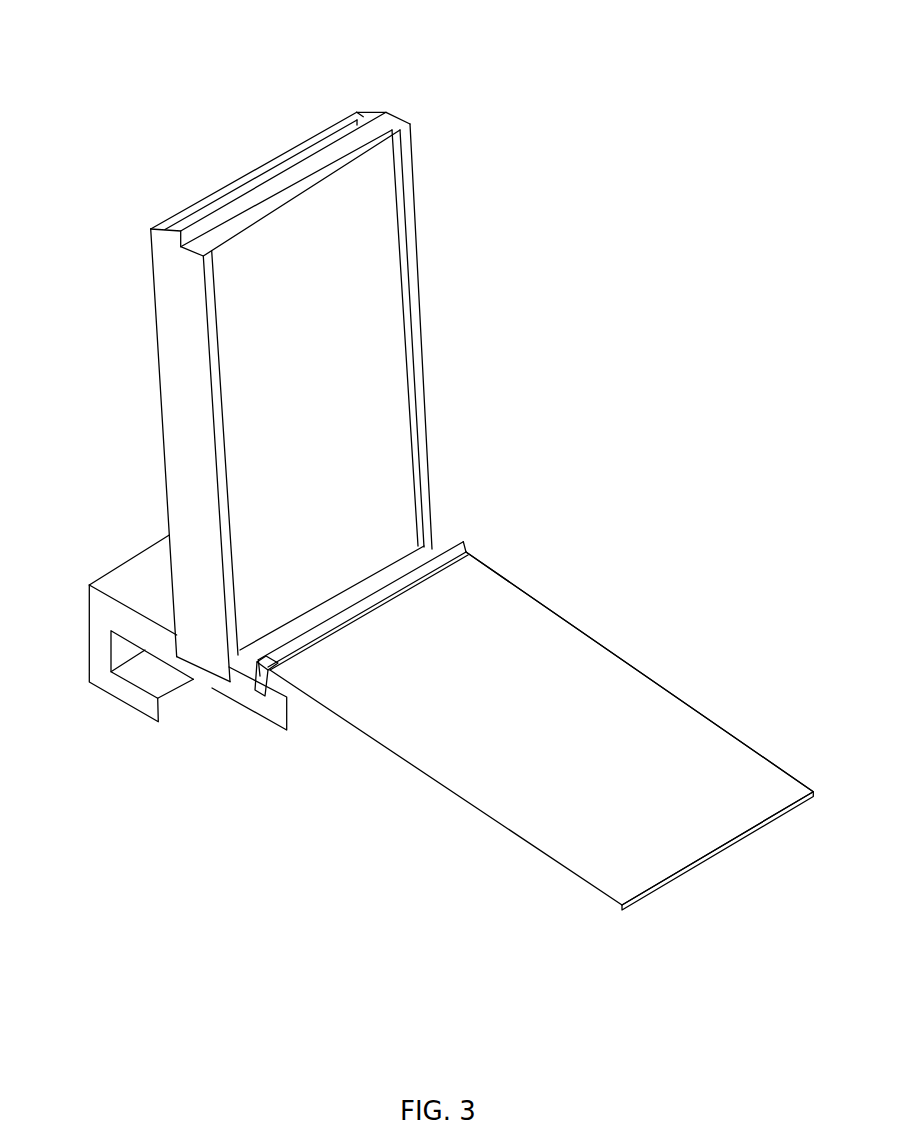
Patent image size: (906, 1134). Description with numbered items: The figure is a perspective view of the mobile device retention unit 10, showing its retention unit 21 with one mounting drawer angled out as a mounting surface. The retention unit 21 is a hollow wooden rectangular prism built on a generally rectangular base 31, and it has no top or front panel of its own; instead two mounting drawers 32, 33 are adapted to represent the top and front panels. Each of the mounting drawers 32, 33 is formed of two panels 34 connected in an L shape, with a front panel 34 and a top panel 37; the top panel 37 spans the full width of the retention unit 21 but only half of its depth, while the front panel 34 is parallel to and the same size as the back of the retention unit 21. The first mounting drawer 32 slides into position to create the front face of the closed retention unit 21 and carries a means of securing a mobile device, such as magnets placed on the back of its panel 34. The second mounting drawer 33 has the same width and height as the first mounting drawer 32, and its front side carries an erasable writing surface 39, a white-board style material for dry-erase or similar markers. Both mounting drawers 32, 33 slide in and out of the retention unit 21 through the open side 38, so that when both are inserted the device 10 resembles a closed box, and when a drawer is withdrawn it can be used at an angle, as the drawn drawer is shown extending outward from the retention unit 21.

The mobile device retention unit 10 is at (101, 55).
The retention unit 21 is at (181, 401).
The base 31 is at (208, 663).
The first mounting drawer 32 is at (378, 378).
The second mounting drawer 33 is at (460, 770).
The panel 34 is at (515, 607).
The top panel 37 is at (385, 127).
The open side 38 is at (410, 322).
The erasable writing surface 39 is at (617, 690).